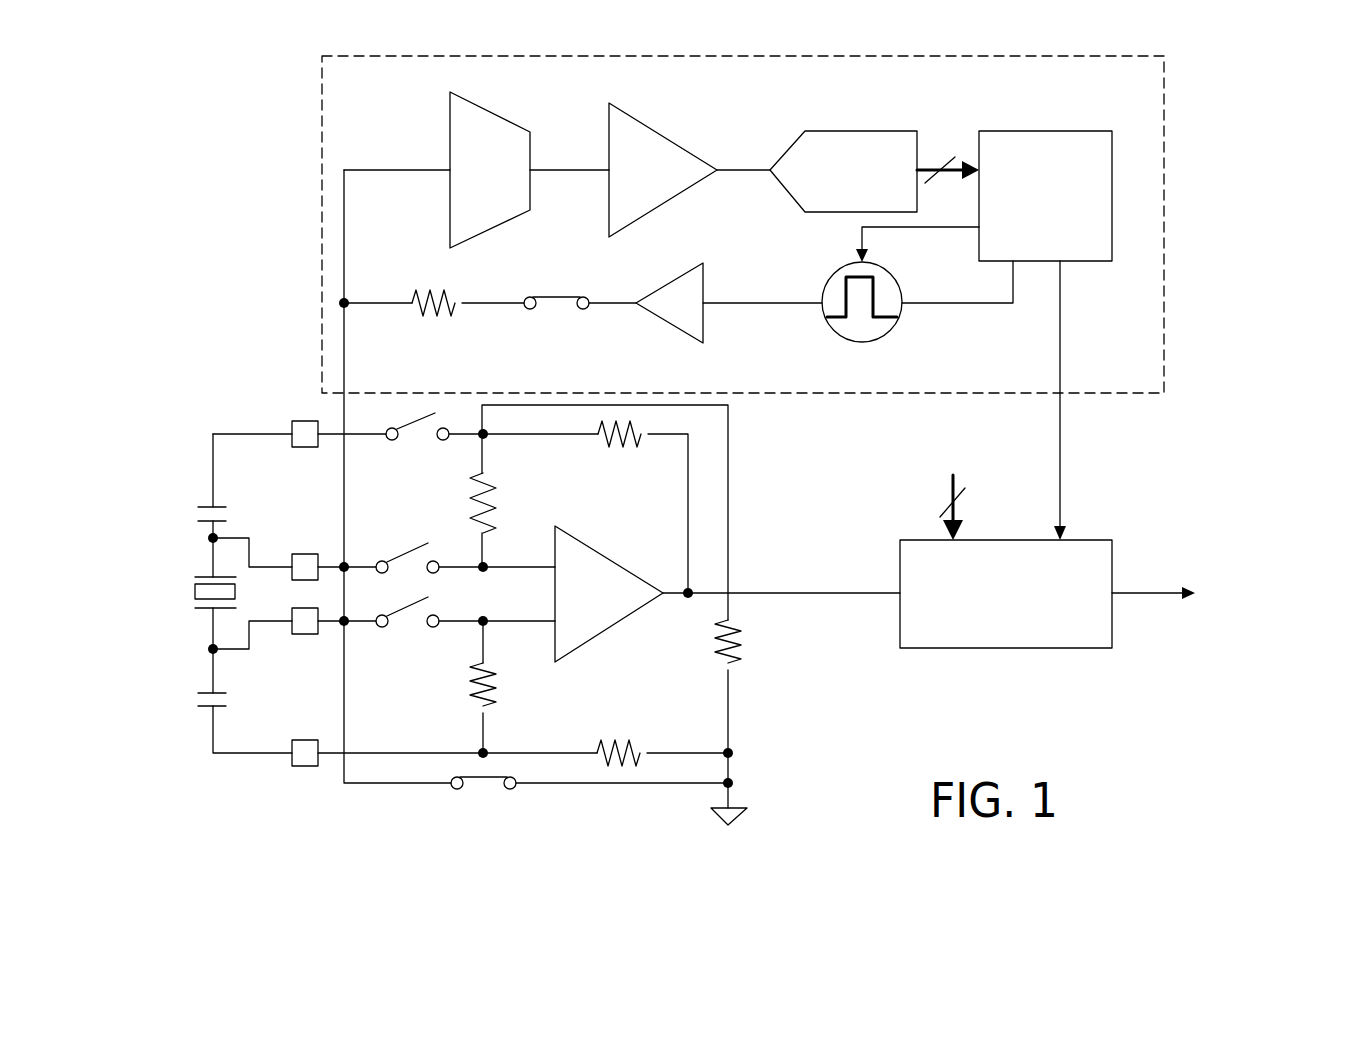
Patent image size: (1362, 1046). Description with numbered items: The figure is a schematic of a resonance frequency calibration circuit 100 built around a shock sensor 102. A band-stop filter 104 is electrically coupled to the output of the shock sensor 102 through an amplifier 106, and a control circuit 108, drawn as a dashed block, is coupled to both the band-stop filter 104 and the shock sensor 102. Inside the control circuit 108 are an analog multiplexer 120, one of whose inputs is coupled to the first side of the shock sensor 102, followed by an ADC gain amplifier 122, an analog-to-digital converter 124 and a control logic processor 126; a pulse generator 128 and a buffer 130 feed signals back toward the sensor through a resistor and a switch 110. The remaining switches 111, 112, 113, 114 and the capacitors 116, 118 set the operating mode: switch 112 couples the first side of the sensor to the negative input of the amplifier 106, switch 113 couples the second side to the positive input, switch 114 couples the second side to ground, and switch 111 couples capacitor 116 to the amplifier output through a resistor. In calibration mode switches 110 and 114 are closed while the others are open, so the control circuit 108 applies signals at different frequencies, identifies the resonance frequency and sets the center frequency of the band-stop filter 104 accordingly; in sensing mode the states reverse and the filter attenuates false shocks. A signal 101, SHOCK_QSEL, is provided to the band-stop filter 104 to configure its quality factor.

The calibration circuit 100 is at (190, 182).
The signal 101 is at (950, 487).
The shock sensor 102 is at (193, 593).
The band-stop filter 104 is at (1090, 540).
The amplifier 106 is at (612, 627).
The control circuit 108 is at (1164, 147).
The switch 110 is at (527, 295).
The switch 111 is at (412, 419).
The switch 112 is at (392, 550).
The switch 113 is at (410, 610).
The switch 114 is at (485, 780).
The capacitor 116 is at (208, 503).
The capacitor 118 is at (203, 713).
The analog multiplexer 120 is at (450, 135).
The ADC gain amplifier 122 is at (685, 148).
The analog-to-digital converter 124 is at (868, 131).
The control logic processor 126 is at (1053, 131).
The pulse generator 128 is at (893, 326).
The buffer 130 is at (668, 327).